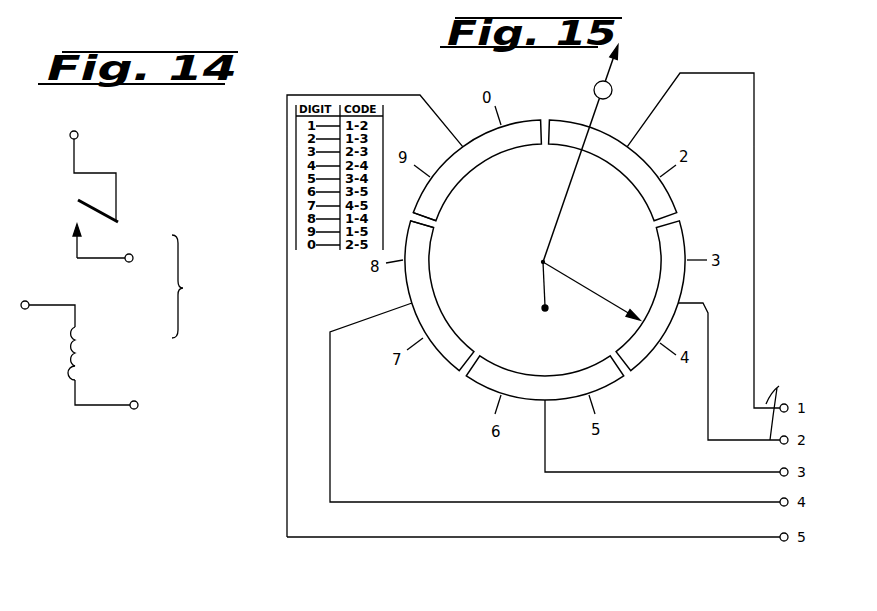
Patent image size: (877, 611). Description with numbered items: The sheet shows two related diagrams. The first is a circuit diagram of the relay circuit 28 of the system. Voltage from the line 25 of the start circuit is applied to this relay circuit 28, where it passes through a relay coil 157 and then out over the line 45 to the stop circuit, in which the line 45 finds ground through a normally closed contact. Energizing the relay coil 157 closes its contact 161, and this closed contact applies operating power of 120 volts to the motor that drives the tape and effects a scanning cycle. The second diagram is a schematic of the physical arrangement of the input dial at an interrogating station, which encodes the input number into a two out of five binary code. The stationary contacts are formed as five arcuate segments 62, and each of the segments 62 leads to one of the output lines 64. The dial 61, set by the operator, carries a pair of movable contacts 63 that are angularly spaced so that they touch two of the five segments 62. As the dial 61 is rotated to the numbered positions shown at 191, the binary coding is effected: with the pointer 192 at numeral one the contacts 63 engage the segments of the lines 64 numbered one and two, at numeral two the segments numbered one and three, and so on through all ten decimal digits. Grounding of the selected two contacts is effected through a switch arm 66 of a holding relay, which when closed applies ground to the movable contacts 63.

In FIG. 14, the relay circuit 28 is at (131, 159).
In FIG. 14, the contact 161 is at (100, 211).
In FIG. 14, the 120 volts 120 is at (128, 281).
In FIG. 14, the line 25 is at (44, 301).
In FIG. 14, the relay coil 157 is at (78, 346).
In FIG. 14, the line 45 is at (131, 402).
In FIG. 15, the numbered positions 191 is at (415, 147).
In FIG. 15, the pointer 192 is at (613, 64).
In FIG. 15, the dial 61 is at (534, 263).
In FIG. 15, the arcuate segments 62 is at (424, 244).
In FIG. 15, the movable contacts 63 is at (556, 231).
In FIG. 15, the output lines 64 is at (778, 404).
In FIG. 15, the switch arm 66 is at (544, 307).